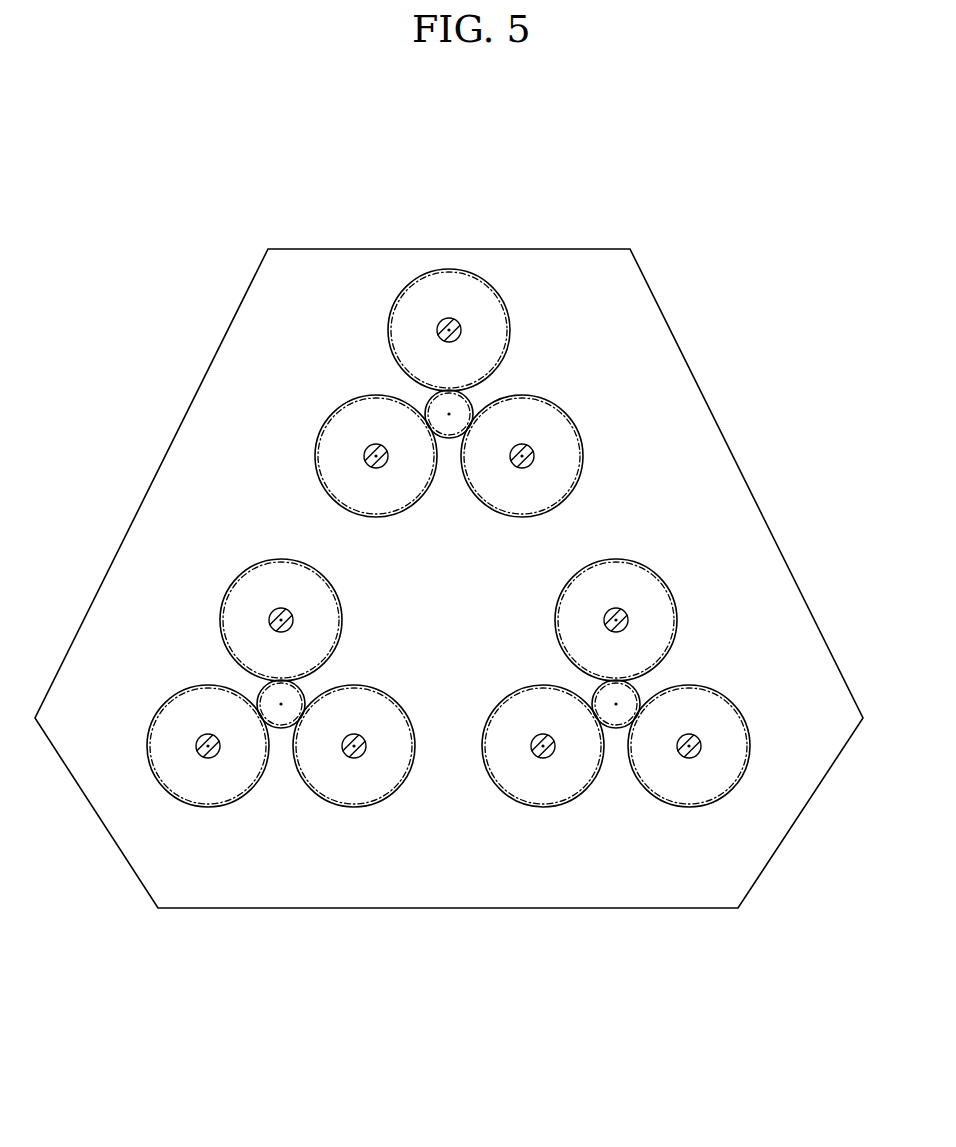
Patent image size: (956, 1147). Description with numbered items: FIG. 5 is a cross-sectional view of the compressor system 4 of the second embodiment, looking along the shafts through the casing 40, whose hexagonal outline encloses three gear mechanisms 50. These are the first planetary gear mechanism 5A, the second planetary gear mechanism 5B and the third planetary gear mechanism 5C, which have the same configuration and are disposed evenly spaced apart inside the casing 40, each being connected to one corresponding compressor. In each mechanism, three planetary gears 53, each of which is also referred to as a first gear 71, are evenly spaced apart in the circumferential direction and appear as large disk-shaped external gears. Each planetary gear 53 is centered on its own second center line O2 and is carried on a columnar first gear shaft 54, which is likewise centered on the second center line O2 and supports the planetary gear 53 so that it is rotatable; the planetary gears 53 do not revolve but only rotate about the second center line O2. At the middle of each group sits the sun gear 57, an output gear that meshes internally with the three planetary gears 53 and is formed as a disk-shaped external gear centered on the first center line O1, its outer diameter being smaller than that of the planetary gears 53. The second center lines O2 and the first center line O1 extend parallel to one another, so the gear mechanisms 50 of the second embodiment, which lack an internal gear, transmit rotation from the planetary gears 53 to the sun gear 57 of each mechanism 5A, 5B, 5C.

The developing device 4 is at (598, 208).
The casing 40 is at (343, 249).
The gear mechanism 50 is at (448, 622).
The first planetary gear mechanism 5A is at (512, 321).
The second planetary gear mechanism 5B is at (677, 809).
The third planetary gear mechanism 5C is at (220, 809).
The planetary gear 53 is at (418, 302).
The first gear 71 is at (445, 555).
The first gear shaft 54 is at (438, 333).
The sun gear 57 is at (466, 404).
The first center line O1 is at (449, 414).
The second center line O2 is at (449, 330).